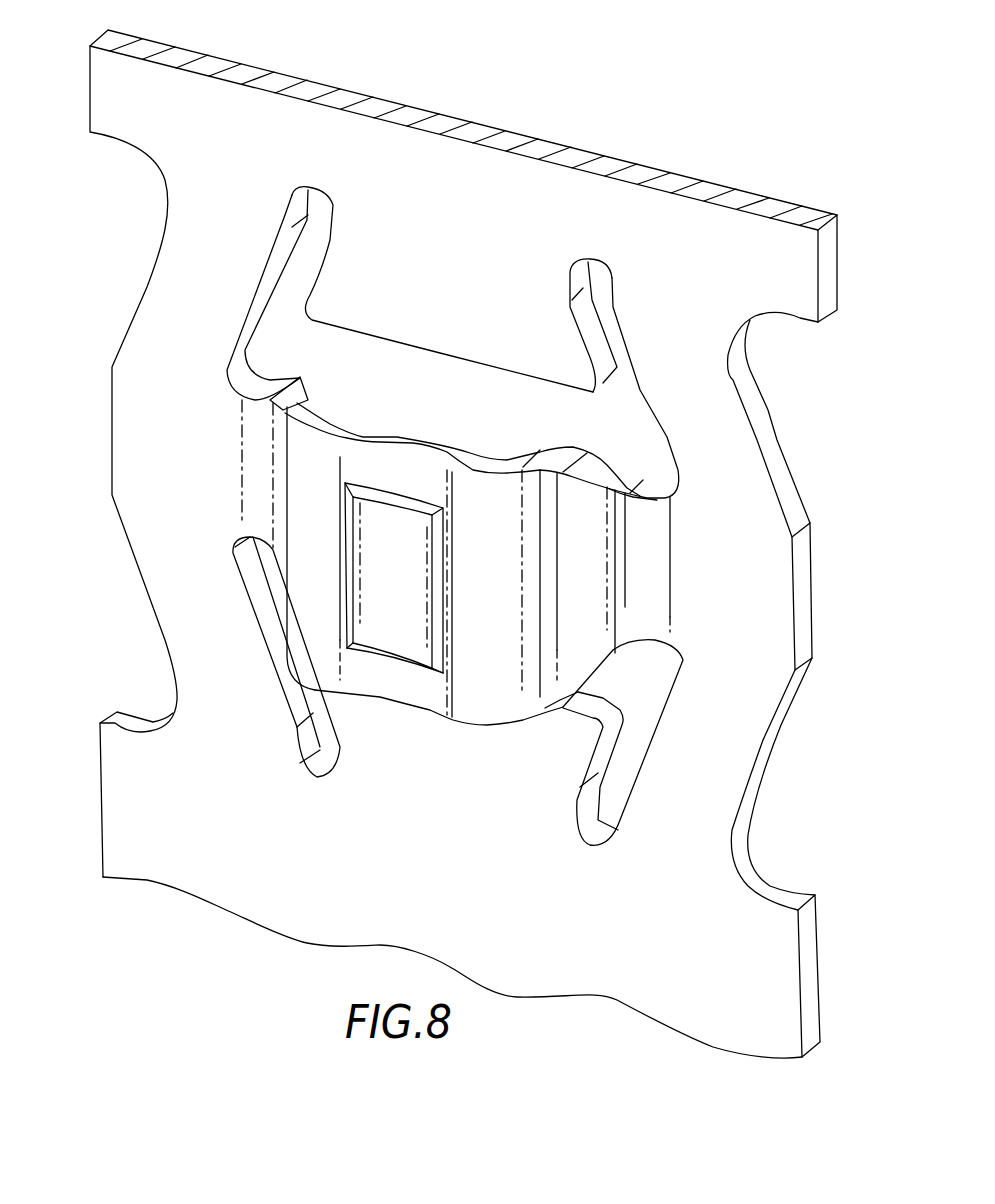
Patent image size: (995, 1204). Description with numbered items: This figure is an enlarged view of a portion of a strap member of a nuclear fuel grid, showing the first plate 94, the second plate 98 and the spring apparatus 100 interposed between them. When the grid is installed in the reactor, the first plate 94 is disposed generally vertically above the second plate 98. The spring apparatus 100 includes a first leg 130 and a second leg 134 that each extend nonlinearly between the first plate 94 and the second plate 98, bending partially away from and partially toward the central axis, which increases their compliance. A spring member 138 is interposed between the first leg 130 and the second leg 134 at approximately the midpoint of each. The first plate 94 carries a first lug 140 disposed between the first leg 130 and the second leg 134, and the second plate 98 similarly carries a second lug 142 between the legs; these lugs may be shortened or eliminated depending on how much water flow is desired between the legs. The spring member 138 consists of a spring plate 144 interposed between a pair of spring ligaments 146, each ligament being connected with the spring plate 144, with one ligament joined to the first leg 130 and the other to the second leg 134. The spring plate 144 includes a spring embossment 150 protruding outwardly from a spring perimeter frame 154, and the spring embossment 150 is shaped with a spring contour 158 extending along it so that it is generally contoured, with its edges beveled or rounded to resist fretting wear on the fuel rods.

The first plate 94 is at (830, 247).
The second plate 98 is at (812, 922).
The spring apparatus 100 is at (812, 568).
The first leg 130 is at (768, 410).
The second leg 134 is at (137, 310).
The spring member 138 is at (488, 728).
The first lug 140 is at (380, 340).
The second lug 142 is at (610, 745).
The spring plate 144 is at (448, 729).
The spring ligaments 146 is at (300, 390).
The spring embossment 150 is at (393, 663).
The spring perimeter frame 154 is at (427, 713).
The spring contour 158 is at (372, 497).